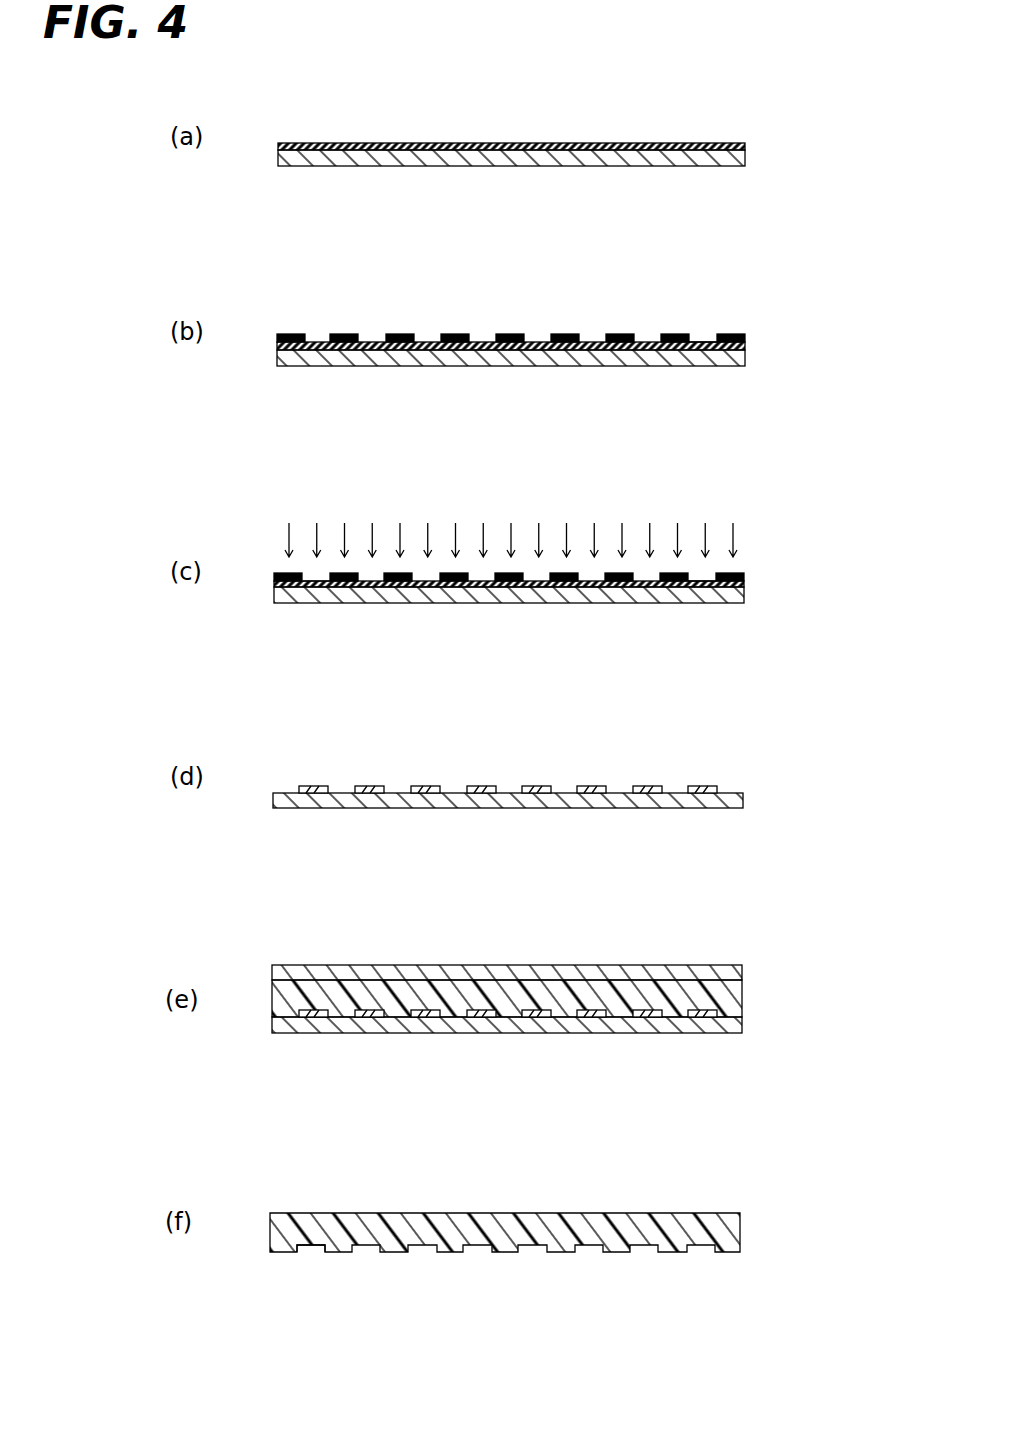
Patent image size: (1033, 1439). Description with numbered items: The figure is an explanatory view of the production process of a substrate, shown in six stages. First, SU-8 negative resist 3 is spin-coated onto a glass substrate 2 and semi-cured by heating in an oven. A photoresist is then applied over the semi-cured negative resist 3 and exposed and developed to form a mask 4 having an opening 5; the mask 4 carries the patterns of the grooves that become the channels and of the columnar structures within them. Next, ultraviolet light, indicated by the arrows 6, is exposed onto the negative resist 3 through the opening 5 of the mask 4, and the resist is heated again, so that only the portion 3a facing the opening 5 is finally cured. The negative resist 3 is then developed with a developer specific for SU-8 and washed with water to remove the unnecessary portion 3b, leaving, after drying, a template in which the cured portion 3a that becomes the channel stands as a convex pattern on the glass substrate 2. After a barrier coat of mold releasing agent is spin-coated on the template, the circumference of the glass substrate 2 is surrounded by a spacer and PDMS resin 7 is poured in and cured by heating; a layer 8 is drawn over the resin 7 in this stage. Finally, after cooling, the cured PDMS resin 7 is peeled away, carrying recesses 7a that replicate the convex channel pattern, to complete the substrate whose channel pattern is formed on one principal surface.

The glass substrate 2 is at (690, 162).
The negative resist 3 is at (706, 143).
The portion facing the opening 3a is at (300, 573).
The unnecessary portion 3b is at (335, 590).
The mask 4 is at (730, 334).
The opening 5 is at (703, 340).
The arrows 6 is at (732, 545).
The PDMS resin 7 is at (447, 987).
The recess of resin layer 7a is at (313, 1253).
The support layer 8 is at (360, 973).